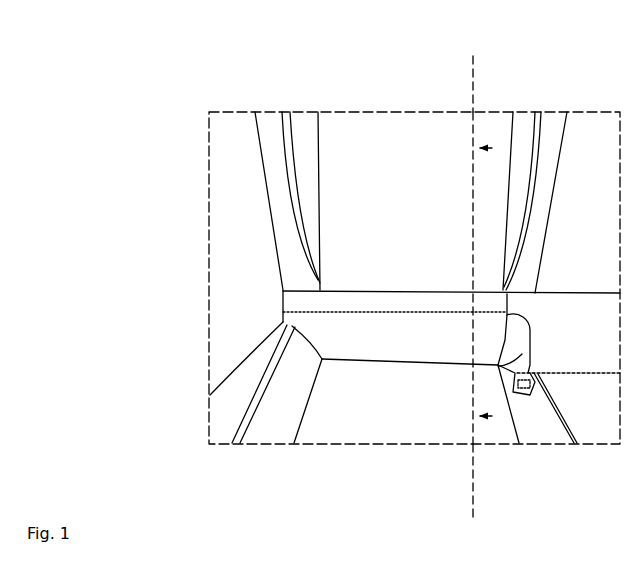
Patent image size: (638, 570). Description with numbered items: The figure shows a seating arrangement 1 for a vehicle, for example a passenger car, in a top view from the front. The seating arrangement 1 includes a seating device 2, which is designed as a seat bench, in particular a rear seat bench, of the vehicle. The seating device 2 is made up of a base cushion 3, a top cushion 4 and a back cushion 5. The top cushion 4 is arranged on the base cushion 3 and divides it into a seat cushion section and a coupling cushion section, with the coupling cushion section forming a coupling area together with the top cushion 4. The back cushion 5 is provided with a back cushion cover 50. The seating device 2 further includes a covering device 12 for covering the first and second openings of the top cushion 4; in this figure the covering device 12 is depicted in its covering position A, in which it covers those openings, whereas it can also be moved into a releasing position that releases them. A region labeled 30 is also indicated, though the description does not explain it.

The seating arrangement 1 is at (200, 85).
The seating device 2 is at (217, 184).
The base cushion 3 is at (401, 409).
The top cushion 4 is at (400, 339).
The back cushion 5 is at (408, 202).
The covering device 12 is at (362, 337).
The sill region 30 is at (348, 422).
The back cushion cover 50 is at (336, 192).